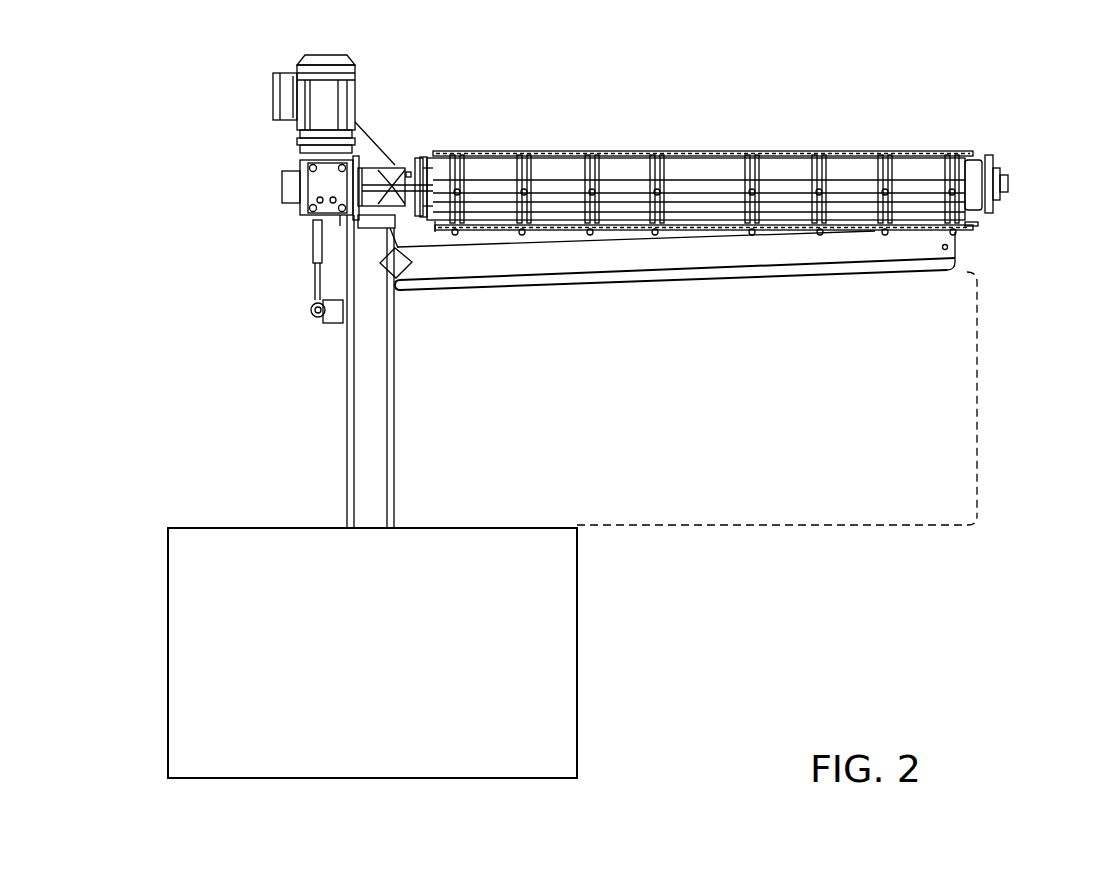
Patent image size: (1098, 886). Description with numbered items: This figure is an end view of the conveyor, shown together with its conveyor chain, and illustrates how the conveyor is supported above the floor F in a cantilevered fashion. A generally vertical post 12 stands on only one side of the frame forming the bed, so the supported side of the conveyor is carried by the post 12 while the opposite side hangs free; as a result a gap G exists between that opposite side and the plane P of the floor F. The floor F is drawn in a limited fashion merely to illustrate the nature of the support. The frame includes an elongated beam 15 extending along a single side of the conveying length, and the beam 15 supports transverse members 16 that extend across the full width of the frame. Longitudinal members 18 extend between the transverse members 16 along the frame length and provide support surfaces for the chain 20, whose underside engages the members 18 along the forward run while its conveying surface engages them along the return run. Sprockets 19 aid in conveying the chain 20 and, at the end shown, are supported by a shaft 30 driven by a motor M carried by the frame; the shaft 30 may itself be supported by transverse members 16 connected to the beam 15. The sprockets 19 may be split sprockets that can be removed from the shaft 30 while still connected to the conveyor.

The motor M is at (338, 58).
The posts 12 is at (347, 403).
The beam 15 is at (402, 178).
The transverse members 16 is at (727, 258).
The longitudinal members 18 is at (958, 238).
The sprockets 19 is at (470, 165).
The chain 20 is at (855, 150).
The shaft 30 is at (1008, 186).
The floor F is at (477, 528).
The gap G is at (977, 355).
The plane P is at (775, 527).